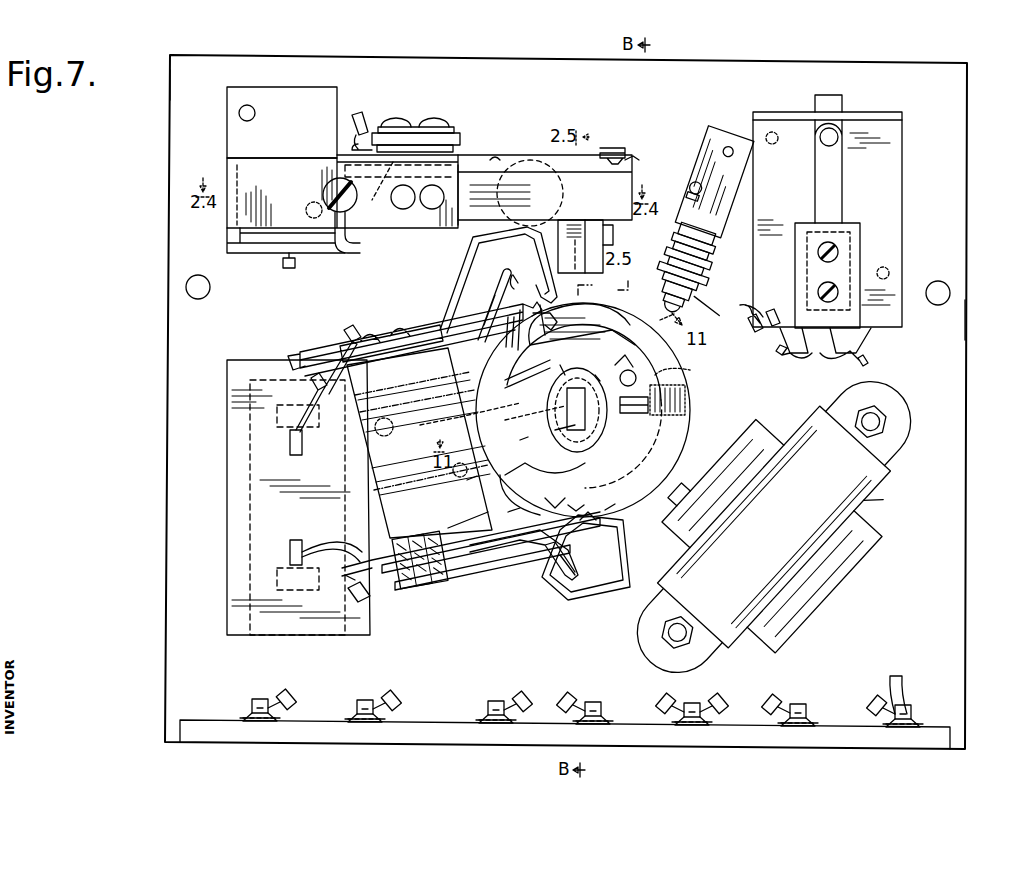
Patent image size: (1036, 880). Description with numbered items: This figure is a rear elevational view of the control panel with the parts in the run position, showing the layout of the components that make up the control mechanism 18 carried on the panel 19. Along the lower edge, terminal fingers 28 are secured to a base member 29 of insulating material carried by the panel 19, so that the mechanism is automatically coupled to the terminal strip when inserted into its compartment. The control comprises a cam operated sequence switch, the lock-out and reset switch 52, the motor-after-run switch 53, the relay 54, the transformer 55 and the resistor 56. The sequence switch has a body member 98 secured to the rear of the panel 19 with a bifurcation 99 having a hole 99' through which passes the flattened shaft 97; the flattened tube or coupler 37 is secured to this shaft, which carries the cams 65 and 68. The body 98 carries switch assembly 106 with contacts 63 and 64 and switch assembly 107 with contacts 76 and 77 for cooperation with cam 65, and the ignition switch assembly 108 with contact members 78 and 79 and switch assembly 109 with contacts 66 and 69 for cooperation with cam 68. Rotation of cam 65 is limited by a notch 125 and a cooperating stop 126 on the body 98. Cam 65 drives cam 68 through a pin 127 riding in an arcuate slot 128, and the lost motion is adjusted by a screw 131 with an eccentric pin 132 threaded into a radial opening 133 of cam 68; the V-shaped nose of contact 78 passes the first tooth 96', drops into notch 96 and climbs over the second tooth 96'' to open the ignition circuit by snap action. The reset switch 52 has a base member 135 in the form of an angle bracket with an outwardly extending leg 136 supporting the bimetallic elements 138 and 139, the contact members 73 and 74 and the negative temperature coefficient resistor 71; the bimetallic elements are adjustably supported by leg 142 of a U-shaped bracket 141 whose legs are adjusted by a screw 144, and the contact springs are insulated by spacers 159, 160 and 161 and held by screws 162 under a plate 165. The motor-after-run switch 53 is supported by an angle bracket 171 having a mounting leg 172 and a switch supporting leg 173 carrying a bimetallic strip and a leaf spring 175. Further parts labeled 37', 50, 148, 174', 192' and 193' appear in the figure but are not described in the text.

The control mechanism 18 is at (967, 208).
The panel 19 is at (178, 87).
The terminal fingers 28 is at (893, 759).
The base member 29 is at (452, 760).
The flattened tube or coupler 37 is at (556, 406).
The knob hub 37' is at (556, 357).
The housing 50 is at (573, 230).
The lock-out and reset switch 52 is at (487, 152).
The motor-after-run switch 53 is at (702, 141).
The relay 54 is at (868, 186).
The transformer 55 is at (788, 526).
The resistor 56 is at (265, 513).
The contact 63 is at (532, 296).
The contact 64 is at (494, 296).
The cam 65 is at (658, 484).
The contact 66 is at (488, 330).
The cam 68 is at (681, 437).
The contact member 69 is at (513, 330).
The negative temperature coefficient resistor 71 is at (530, 160).
The contact member 73 is at (633, 158).
The contact member 74 is at (500, 158).
The contact 76 is at (586, 557).
The contact 77 is at (556, 576).
The contact member 78 is at (611, 502).
The contact member 79 is at (585, 510).
The notch 96 is at (550, 487).
The first tooth 96' is at (505, 504).
The second tooth 96'' is at (583, 488).
The flattened shaft 97 is at (573, 443).
The body member 98 is at (383, 453).
The bifurcation 99 is at (462, 502).
The hole 99' is at (529, 441).
The switch assembly 106 is at (430, 310).
The switch assembly 107 is at (516, 574).
The ignition switch assembly 108 is at (535, 522).
The switch assembly 109 is at (450, 358).
The notch 125 is at (535, 421).
The stop 126 is at (466, 417).
The pin 127 is at (630, 369).
The arcuate slot 128 is at (597, 374).
The screw 131 is at (688, 390).
The eccentric pin 132 is at (632, 414).
The radial opening 133 is at (650, 350).
The base member 135 is at (310, 108).
The outwardly extending leg part 136 is at (366, 254).
The bimetallic element 138 is at (460, 212).
The bimetallic element 139 is at (612, 220).
The U-shaped bracket 141 is at (248, 157).
The leg 142 is at (272, 184).
The screw 144 is at (324, 193).
The screws 148 is at (403, 209).
The insulated spacer 159 is at (372, 200).
The insulated spacer 160 is at (454, 142).
The insulated spacer 161 is at (450, 128).
The screws 162 is at (398, 122).
The plate 165 is at (437, 122).
The angle bracket 171 is at (735, 165).
The mounting leg 172 is at (735, 150).
The switch supporting leg 173 is at (722, 215).
The insulator 174' is at (719, 242).
The leaf spring 175 is at (714, 262).
The terminal 192' is at (716, 286).
The section line 193' is at (603, 292).